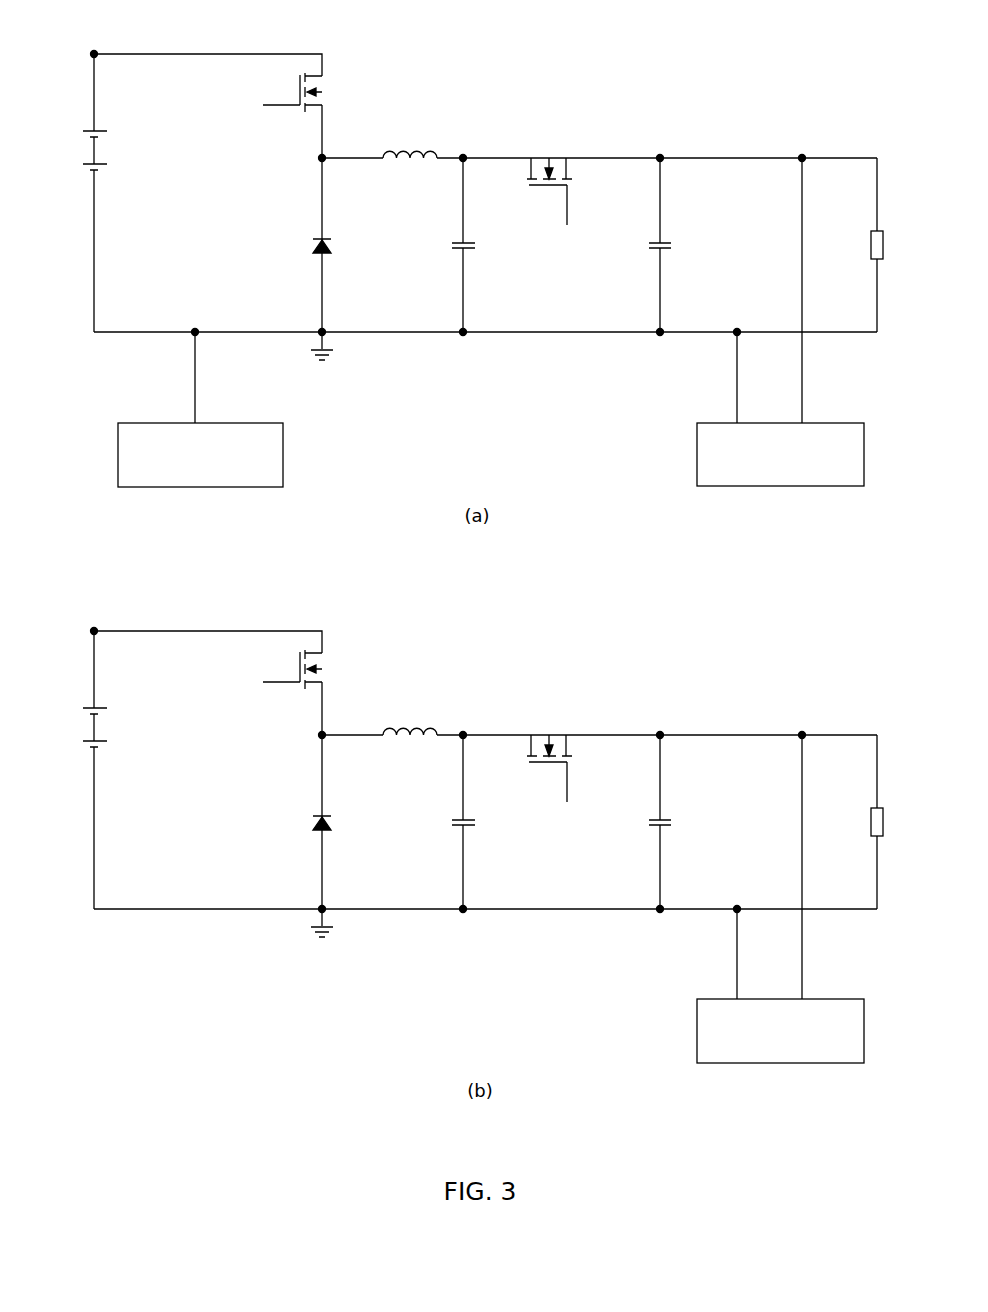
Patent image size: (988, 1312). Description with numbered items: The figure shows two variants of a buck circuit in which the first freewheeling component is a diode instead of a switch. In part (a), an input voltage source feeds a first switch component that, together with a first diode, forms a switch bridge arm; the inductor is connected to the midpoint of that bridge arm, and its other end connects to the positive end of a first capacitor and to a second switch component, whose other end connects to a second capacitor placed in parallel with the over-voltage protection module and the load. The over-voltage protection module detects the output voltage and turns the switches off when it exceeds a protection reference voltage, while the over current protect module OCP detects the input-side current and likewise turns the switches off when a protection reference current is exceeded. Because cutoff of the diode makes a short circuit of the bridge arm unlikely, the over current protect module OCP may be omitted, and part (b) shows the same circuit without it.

The over current protect module OCP is at (200, 408).